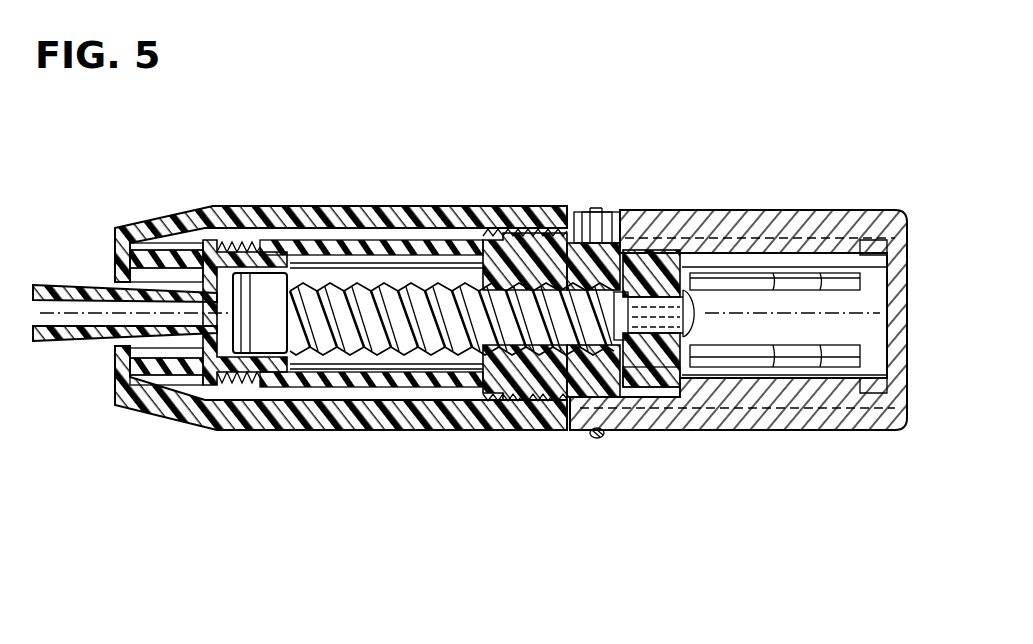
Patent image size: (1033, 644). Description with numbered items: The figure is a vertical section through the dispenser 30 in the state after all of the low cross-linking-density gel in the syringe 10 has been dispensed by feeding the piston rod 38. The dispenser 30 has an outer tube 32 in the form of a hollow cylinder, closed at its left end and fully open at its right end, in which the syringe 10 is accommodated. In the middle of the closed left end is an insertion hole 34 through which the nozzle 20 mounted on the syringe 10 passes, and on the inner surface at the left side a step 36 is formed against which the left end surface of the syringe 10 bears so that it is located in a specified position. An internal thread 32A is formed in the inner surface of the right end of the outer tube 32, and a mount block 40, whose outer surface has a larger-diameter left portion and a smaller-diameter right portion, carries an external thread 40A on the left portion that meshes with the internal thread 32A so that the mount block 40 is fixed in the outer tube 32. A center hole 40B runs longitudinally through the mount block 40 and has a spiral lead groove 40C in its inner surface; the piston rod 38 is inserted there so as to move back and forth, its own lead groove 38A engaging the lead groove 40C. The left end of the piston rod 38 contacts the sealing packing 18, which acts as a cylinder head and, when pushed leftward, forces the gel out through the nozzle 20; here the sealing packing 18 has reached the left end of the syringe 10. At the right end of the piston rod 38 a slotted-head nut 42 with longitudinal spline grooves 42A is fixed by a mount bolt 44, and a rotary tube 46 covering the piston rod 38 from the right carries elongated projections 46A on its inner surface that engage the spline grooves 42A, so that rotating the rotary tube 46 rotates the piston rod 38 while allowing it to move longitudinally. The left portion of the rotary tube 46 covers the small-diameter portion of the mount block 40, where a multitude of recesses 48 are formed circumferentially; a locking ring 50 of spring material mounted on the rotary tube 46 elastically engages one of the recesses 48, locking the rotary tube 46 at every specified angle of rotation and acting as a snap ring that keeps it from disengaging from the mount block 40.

The syringe 10 is at (333, 206).
The sealing packing 18 is at (250, 206).
The nozzle 20 is at (80, 284).
The dispenser 30 is at (435, 176).
The outer tube 32 is at (232, 206).
The internal thread 32A is at (520, 206).
The insertion hole 34 is at (112, 338).
The step 36 is at (160, 367).
The piston rod 38 is at (392, 206).
The lead groove 38A is at (562, 431).
The mount block 40 is at (512, 232).
The external thread 40A is at (492, 433).
The center hole 40B is at (517, 433).
The lead groove 40C is at (545, 208).
The slotted-head nut 42 is at (673, 210).
The spline grooves 42A is at (672, 398).
The mount bolt 44 is at (717, 210).
The rotary tube 46 is at (790, 210).
The elongated projections 46A is at (830, 210).
The recesses 48 is at (620, 210).
The locking ring 50 is at (595, 208).